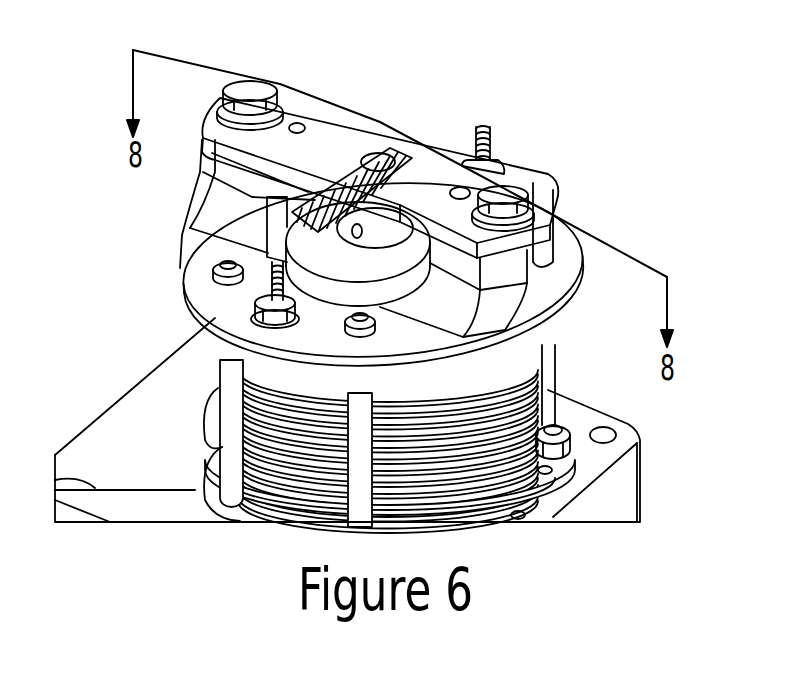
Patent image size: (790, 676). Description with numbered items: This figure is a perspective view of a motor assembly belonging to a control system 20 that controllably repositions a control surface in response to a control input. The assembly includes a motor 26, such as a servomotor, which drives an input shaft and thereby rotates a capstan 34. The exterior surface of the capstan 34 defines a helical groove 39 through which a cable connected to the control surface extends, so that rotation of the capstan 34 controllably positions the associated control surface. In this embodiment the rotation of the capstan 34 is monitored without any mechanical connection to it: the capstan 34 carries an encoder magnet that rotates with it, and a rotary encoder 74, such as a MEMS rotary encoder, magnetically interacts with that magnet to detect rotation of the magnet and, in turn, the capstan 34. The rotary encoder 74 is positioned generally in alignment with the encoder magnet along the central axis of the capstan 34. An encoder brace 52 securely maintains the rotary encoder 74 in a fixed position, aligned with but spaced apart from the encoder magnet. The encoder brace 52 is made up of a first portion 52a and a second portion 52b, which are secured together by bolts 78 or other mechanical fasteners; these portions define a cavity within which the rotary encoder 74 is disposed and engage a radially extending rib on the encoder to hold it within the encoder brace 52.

The control system 20 is at (638, 208).
The motor 26 is at (620, 497).
The capstan 34 is at (503, 480).
The helical groove 39 is at (292, 488).
The encoder brace 52 is at (566, 309).
The first portion of the encoder brace 52a is at (196, 205).
The second portion of the encoder brace 52b is at (313, 112).
The rotary encoder 74 is at (377, 160).
The bolts 78 is at (250, 88).